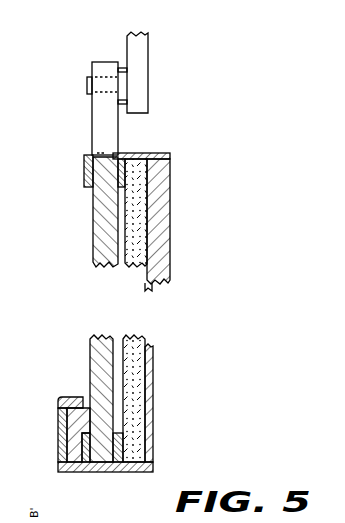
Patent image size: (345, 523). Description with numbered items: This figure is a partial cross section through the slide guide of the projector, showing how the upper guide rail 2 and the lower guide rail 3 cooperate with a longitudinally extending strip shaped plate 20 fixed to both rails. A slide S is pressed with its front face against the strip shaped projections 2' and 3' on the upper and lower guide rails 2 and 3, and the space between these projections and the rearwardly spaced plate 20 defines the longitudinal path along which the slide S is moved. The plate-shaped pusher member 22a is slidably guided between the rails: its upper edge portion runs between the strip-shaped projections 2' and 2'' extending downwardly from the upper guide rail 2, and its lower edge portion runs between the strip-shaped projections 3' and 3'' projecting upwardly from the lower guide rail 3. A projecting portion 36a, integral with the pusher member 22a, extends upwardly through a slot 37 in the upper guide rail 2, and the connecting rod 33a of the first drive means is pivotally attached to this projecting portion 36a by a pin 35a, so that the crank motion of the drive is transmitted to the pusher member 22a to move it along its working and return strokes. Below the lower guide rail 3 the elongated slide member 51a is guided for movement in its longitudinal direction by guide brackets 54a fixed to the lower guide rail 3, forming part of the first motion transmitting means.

The connecting rod 33a is at (150, 45).
The pin 35a is at (87, 81).
The projecting portion 36a is at (100, 128).
The slot 37 is at (112, 156).
The upper guide rail 2 is at (153, 207).
The strip shaped projection 2' is at (163, 181).
The strip-shaped projection 2'' is at (62, 177).
The slide S is at (170, 242).
The pusher member 22a is at (92, 343).
The strip shaped plate 20 is at (155, 397).
The lower guide rail 3 is at (105, 464).
The strip shaped projection 3' is at (152, 448).
The strip-shaped projection 3'' is at (52, 450).
The slide member 51a is at (72, 420).
The guide bracket 54a is at (58, 408).